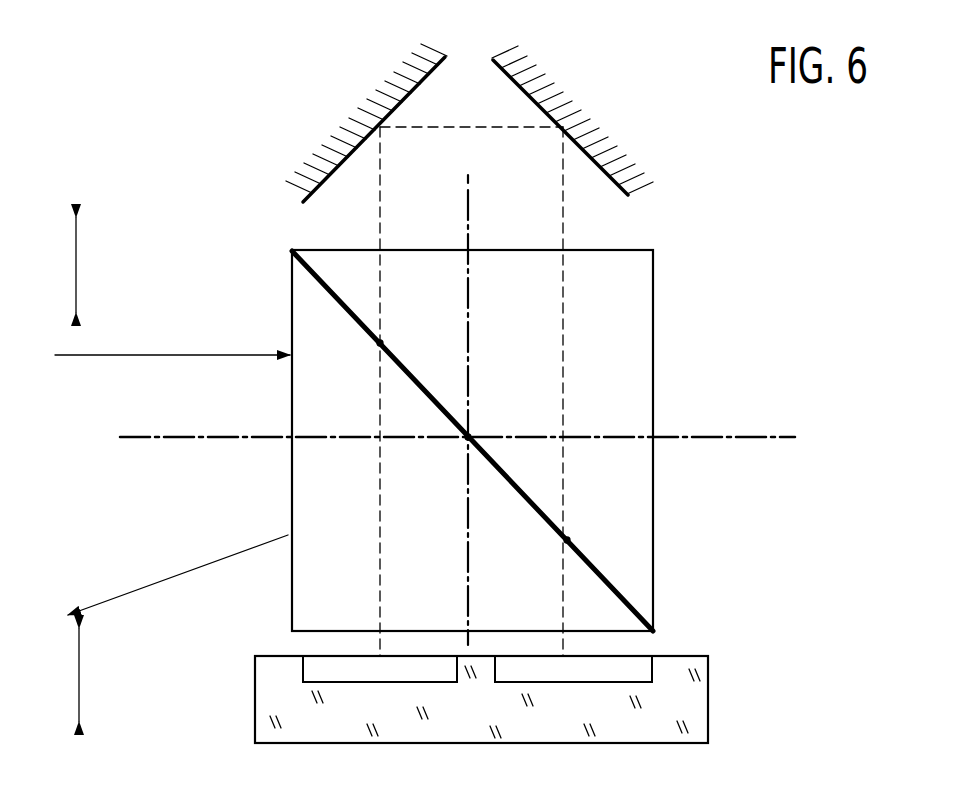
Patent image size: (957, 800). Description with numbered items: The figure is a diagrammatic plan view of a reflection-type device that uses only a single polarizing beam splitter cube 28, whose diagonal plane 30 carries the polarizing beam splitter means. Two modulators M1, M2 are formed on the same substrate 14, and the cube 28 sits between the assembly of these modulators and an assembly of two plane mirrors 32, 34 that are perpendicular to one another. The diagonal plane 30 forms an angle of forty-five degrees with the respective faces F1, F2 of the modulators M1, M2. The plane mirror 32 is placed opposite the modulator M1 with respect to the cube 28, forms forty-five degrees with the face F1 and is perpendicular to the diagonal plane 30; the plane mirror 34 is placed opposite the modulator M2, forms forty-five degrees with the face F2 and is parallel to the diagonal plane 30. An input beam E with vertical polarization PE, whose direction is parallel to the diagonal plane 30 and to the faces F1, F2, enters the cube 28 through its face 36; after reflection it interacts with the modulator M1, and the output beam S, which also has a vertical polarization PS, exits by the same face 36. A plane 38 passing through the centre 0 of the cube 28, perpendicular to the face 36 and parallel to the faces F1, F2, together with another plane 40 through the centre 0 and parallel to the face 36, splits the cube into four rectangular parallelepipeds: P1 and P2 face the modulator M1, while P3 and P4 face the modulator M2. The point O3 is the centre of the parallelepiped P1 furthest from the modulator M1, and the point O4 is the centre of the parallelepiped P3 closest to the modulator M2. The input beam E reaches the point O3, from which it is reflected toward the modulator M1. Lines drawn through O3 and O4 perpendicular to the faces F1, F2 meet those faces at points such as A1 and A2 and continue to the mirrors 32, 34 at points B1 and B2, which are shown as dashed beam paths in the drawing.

The substrate 14 is at (688, 712).
The polarizing beam splitter cube 28 is at (670, 265).
The diagonal plane 30 is at (333, 297).
The plane mirror 32 is at (328, 158).
The plane mirror 34 is at (595, 135).
The face of the cube 36 is at (290, 405).
The plane 38 is at (157, 440).
The plane 40 is at (468, 195).
The input beam E is at (100, 357).
The output beam S is at (118, 592).
The vertical polarization of input beam PE is at (76, 245).
The vertical polarization of output beam PS is at (79, 672).
The parallelepiped P1 is at (295, 320).
The parallelepiped P2 is at (320, 497).
The parallelepiped P3 is at (628, 556).
The parallelepiped P4 is at (616, 381).
The first beam B1 is at (380, 130).
The second beam B2 is at (563, 130).
The point O3 is at (382, 344).
The point O4 is at (569, 538).
The centre of the cube 0 is at (470, 437).
The first aperture A1 is at (380, 656).
The point A2 is at (565, 656).
The face of modulator M1 F1 is at (318, 656).
The face of modulator M2 F2 is at (645, 656).
The modulator M1 is at (300, 672).
The modulator M2 is at (657, 667).